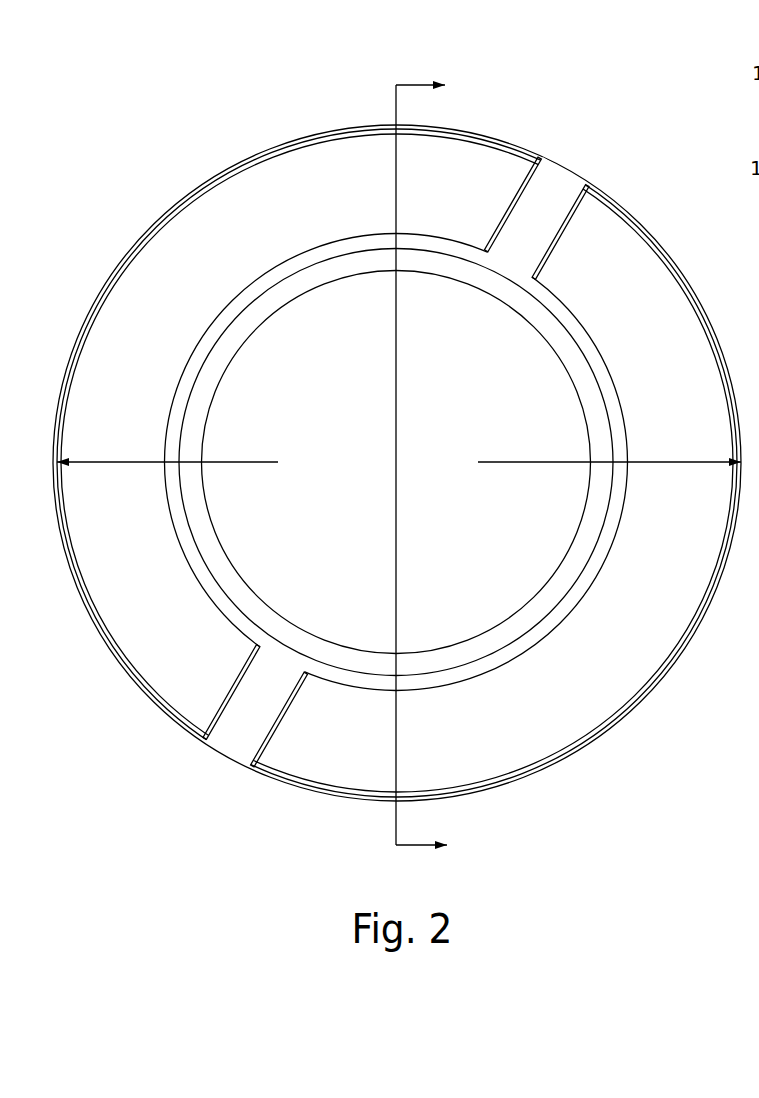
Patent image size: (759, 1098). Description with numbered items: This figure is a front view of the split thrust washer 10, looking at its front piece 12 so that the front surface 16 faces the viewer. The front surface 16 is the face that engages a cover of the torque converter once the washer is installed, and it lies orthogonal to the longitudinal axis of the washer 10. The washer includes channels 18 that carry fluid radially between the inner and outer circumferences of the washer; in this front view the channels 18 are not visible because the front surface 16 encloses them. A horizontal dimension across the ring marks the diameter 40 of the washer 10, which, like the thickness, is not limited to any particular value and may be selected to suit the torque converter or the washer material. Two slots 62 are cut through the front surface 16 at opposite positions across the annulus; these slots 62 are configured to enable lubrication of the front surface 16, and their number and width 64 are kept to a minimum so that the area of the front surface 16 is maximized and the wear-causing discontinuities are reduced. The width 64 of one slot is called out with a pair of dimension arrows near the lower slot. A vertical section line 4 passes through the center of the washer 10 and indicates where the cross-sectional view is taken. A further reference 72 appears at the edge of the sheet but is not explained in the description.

The split thrust washer 10 is at (397, 432).
The front piece 12 is at (352, 118).
The front surface 16 is at (293, 177).
The channel 18 is at (748, 272).
The diameter 40 is at (399, 462).
The slot 62 is at (558, 190).
The width 64 is at (151, 757).
The passage 72 is at (745, 768).
The line 4- 4 is at (433, 465).